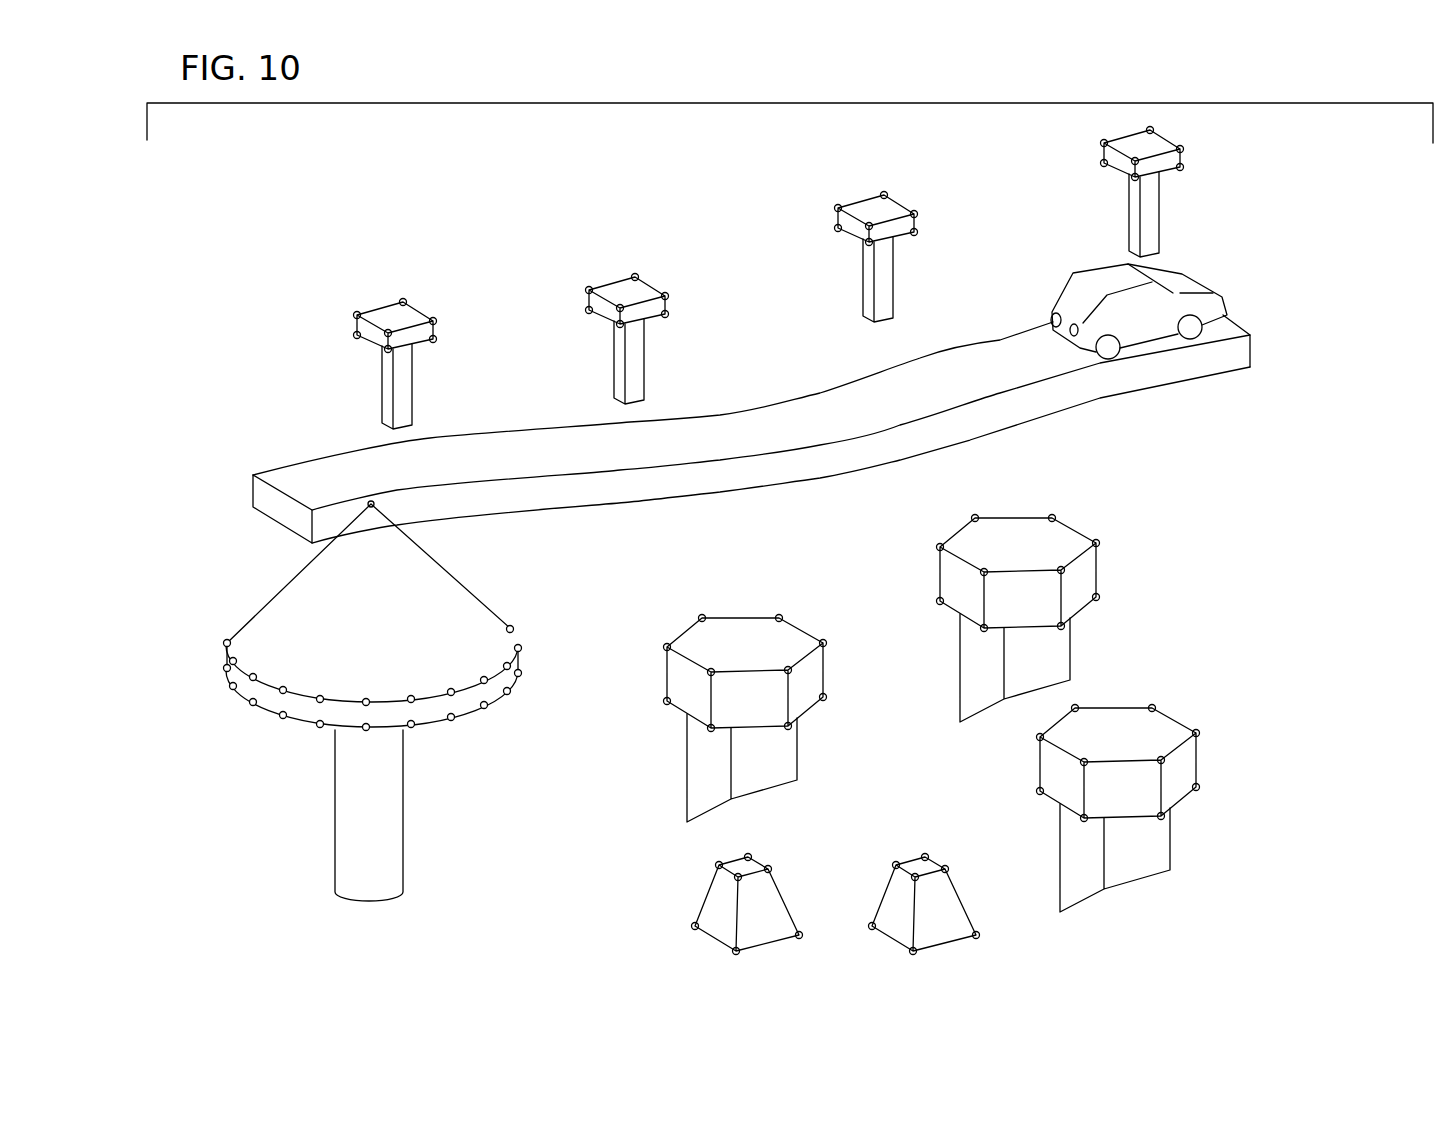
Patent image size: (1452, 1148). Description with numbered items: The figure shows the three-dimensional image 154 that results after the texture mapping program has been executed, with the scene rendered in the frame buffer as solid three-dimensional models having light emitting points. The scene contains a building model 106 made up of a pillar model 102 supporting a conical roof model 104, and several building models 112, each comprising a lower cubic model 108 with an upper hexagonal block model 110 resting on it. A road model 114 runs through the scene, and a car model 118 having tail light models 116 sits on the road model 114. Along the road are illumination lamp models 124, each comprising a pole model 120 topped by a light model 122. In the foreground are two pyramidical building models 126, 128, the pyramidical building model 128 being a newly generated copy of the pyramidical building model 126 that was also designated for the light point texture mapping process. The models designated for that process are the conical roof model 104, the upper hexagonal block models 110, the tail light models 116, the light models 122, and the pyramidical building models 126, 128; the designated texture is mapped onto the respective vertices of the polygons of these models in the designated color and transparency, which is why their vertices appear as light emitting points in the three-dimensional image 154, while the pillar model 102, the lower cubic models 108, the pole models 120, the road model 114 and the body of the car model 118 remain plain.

The pillar model 102 is at (387, 793).
The conical roof model 104 is at (462, 697).
The building model 106 is at (407, 701).
The lower cubic model 108 is at (770, 767).
The upper hexagonal block model 110 is at (813, 670).
The building model 112 is at (986, 714).
The road model 114 is at (855, 407).
The tail light model 116 is at (1051, 319).
The car model 118 is at (1107, 343).
The pole model 120 is at (405, 375).
The light model 122 is at (428, 330).
The illumination lamp model 124 is at (825, 278).
The pyramidical building model 126 is at (924, 890).
The pyramidical building model 128 is at (737, 863).
The three-dimensional image 154 is at (495, 254).